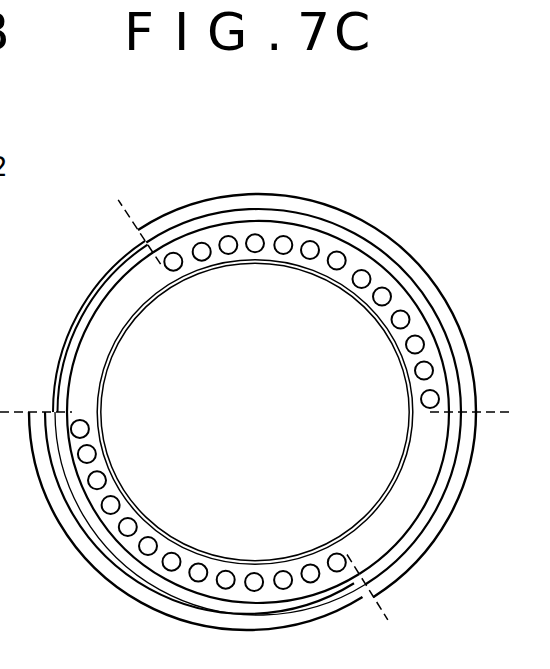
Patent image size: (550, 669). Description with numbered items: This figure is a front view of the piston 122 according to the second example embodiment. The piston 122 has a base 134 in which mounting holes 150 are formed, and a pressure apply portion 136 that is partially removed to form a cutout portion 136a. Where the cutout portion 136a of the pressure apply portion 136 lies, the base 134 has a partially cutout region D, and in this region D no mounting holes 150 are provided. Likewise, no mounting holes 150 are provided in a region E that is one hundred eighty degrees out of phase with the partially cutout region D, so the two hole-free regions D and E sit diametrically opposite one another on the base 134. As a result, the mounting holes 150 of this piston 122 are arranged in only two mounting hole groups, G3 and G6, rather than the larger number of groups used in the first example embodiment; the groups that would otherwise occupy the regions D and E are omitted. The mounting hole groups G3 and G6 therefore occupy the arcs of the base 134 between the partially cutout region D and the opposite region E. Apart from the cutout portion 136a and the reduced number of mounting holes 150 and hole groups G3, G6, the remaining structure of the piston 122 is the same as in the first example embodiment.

The piston 122 is at (427, 197).
The base 134 is at (410, 399).
The pressure apply portion 136 is at (441, 286).
The cutout portion 136a is at (103, 285).
The mounting holes 150 is at (309, 253).
The mounting hole group G3 is at (190, 537).
The mounting hole group G6 is at (352, 324).
The partially cutout region D is at (115, 207).
The region E is at (505, 416).